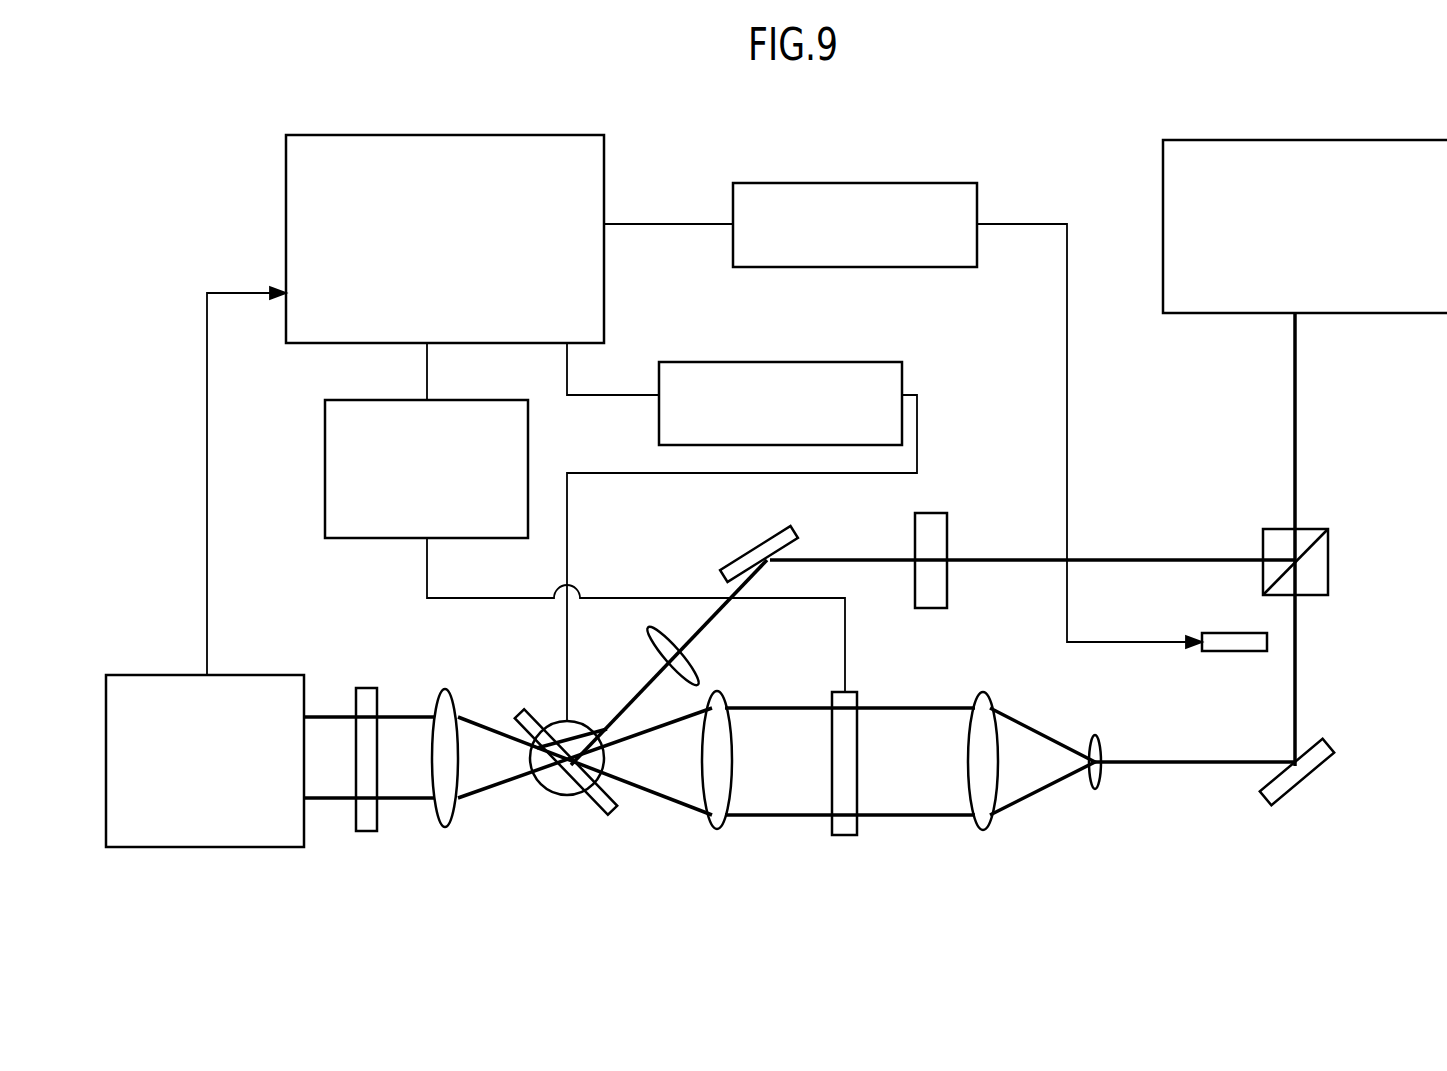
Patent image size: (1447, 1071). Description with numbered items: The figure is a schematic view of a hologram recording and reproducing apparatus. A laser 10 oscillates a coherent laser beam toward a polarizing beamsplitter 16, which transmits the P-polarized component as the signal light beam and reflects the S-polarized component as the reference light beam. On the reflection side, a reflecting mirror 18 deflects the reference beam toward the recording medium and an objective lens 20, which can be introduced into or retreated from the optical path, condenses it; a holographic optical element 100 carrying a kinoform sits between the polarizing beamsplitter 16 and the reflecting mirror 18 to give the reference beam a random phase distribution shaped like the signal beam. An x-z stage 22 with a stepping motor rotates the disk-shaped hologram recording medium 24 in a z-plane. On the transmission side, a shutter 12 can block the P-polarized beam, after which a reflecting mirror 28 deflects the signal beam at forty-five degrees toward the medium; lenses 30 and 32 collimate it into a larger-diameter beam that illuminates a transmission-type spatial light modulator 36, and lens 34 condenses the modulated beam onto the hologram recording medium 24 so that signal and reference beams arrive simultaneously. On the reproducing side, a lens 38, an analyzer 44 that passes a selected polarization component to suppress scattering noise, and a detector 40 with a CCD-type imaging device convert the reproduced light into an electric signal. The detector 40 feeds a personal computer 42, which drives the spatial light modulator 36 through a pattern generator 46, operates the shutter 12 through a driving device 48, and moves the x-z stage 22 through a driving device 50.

The laser 10 is at (1388, 140).
The shutter 12 is at (1228, 633).
The polarizing beamsplitter 16 is at (1328, 570).
The reflecting mirror 18 is at (741, 560).
The objective lens 20 is at (698, 660).
The x-z stage 22 is at (545, 790).
The hologram recording medium 24 is at (605, 818).
The reflecting mirror 28 is at (1298, 785).
The lens 30 is at (1095, 790).
The lens 32 is at (980, 830).
The lens 34 is at (716, 829).
The spatial light modulator 36 is at (845, 835).
The lens 38 is at (446, 827).
The detector 40 is at (207, 847).
The personal computer 42 is at (456, 142).
The analyzer 44 is at (363, 831).
The pattern generator 46 is at (358, 538).
The driving device 48 is at (920, 183).
The driving device 50 is at (857, 362).
The holographic optical element 100 is at (947, 535).